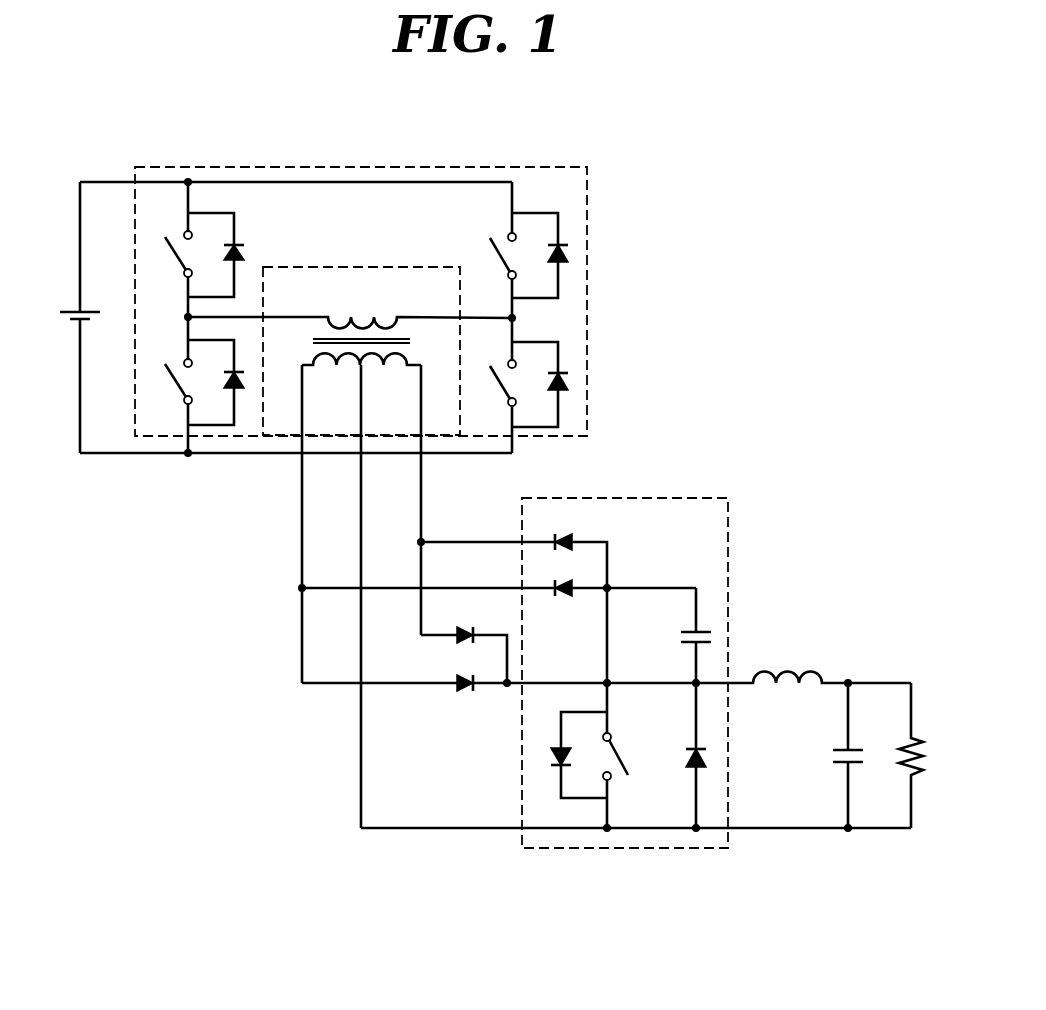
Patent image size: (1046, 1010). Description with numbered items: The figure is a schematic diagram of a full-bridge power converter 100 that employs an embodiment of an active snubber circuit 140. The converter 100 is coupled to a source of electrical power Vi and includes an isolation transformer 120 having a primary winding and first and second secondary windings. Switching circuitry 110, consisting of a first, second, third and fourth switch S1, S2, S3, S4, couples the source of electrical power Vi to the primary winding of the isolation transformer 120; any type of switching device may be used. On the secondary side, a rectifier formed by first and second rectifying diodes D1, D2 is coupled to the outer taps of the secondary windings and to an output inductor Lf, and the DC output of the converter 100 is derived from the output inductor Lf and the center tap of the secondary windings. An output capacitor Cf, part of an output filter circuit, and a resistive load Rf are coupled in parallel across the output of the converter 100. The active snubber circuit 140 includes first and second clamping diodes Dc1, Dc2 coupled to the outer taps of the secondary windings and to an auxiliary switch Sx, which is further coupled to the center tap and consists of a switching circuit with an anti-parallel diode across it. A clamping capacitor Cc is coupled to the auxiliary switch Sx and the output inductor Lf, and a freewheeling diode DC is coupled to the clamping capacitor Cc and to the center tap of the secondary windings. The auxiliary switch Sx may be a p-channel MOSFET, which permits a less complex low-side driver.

The power converter 100 is at (678, 346).
The switching circuitry 110 is at (225, 167).
The isolation transformer 120 is at (335, 315).
The active snubber circuit 140 is at (700, 498).
The source of electrical power Vi is at (70, 317).
The first switch S1 is at (166, 254).
The second switch S2 is at (166, 381).
The third switch S3 is at (485, 249).
The fourth switch S4 is at (490, 384).
The first rectifying diode D1 is at (470, 627).
The second rectifying diode D2 is at (462, 688).
The first clamping diode Dc1 is at (573, 541).
The second clamping diode Dc2 is at (557, 594).
The clamping capacitor Cc is at (681, 637).
The auxiliary switch Sx is at (632, 742).
The freewheeling diode DC is at (690, 757).
The output inductor Lf is at (792, 670).
The output capacitor Cf is at (833, 753).
The resistive load Rf is at (900, 746).